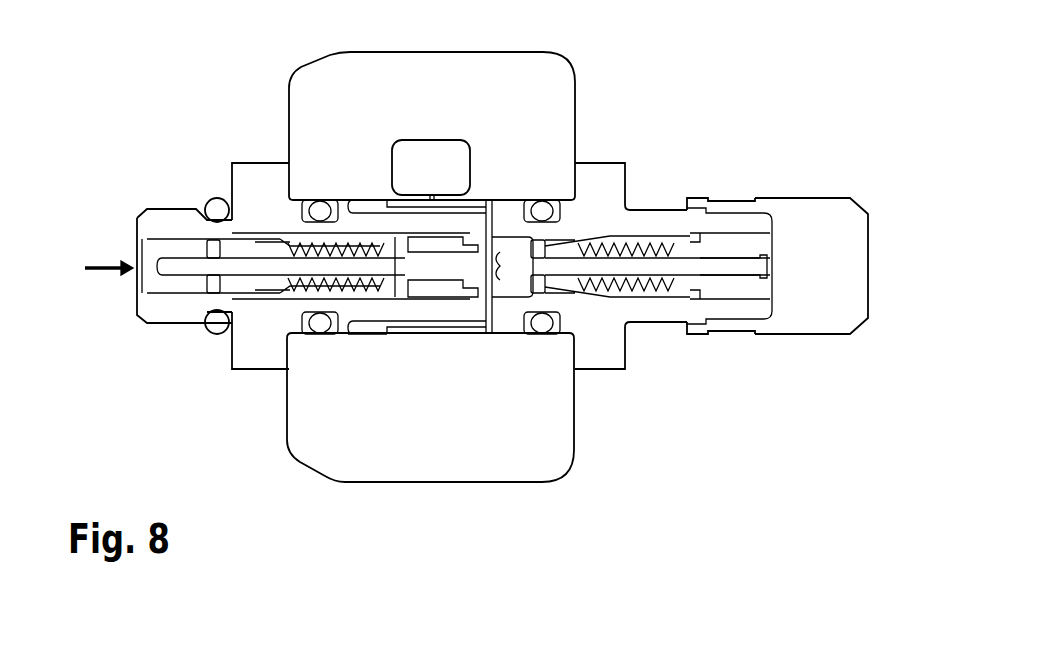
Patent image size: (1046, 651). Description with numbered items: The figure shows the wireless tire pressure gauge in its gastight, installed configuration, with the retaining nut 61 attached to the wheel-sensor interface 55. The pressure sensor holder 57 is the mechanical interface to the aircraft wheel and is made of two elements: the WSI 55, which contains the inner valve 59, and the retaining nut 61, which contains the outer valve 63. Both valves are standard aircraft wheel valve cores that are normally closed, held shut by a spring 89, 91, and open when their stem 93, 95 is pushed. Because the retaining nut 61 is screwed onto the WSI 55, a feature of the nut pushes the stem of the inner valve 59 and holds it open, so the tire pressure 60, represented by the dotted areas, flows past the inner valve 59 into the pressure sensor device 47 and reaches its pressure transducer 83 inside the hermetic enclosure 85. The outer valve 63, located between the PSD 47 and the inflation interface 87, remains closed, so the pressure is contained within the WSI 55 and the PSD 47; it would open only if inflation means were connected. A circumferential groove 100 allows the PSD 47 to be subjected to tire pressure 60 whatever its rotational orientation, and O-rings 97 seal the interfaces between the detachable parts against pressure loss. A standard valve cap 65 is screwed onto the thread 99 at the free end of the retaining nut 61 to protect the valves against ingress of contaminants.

The pressure sensor device 47 is at (288, 96).
The wheel-sensor interface 55 is at (232, 163).
The pressure sensor holder 57 is at (630, 385).
The inner valve 59 is at (273, 295).
The tire pressure 60 is at (320, 70).
The retaining nut 61 is at (605, 163).
The outer valve 63 is at (650, 232).
The valve cap 65 is at (862, 228).
The pressure transducer 83 is at (440, 160).
The PSD enclosure 85 is at (548, 470).
The inflation interface 87 is at (758, 243).
The spring 89 is at (300, 293).
The spring 91 is at (642, 302).
The stem 93 is at (190, 263).
The stem 95 is at (735, 268).
The O-rings 97 is at (210, 203).
The thread 99 is at (733, 212).
The circumferential groove 100 is at (440, 334).